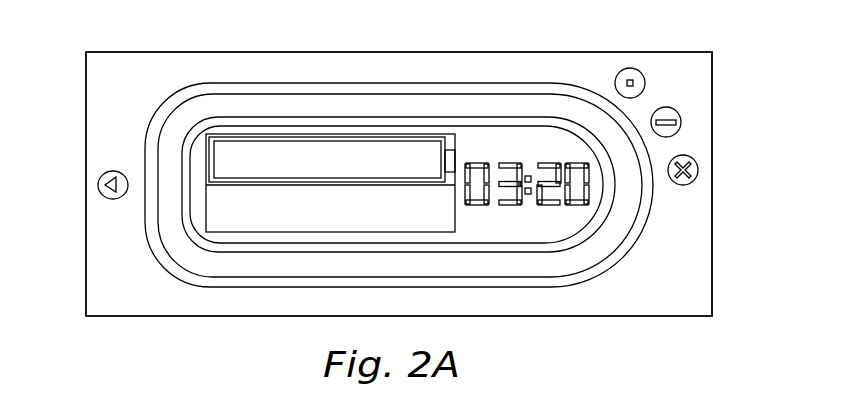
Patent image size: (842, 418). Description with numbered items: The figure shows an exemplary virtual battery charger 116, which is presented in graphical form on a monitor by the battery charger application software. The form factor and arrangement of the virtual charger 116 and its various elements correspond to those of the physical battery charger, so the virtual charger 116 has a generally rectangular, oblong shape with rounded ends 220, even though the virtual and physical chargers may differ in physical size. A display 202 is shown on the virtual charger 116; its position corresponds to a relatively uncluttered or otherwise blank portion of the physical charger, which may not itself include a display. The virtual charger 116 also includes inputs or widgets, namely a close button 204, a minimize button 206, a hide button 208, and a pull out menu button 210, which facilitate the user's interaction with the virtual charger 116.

The virtual battery charger 116 is at (250, 83).
The display 202 is at (528, 163).
The close button 204 is at (698, 168).
The minimize button 206 is at (678, 110).
The hide button 208 is at (645, 78).
The pull out menu button 210 is at (98, 180).
The rounded ends 220 is at (630, 247).